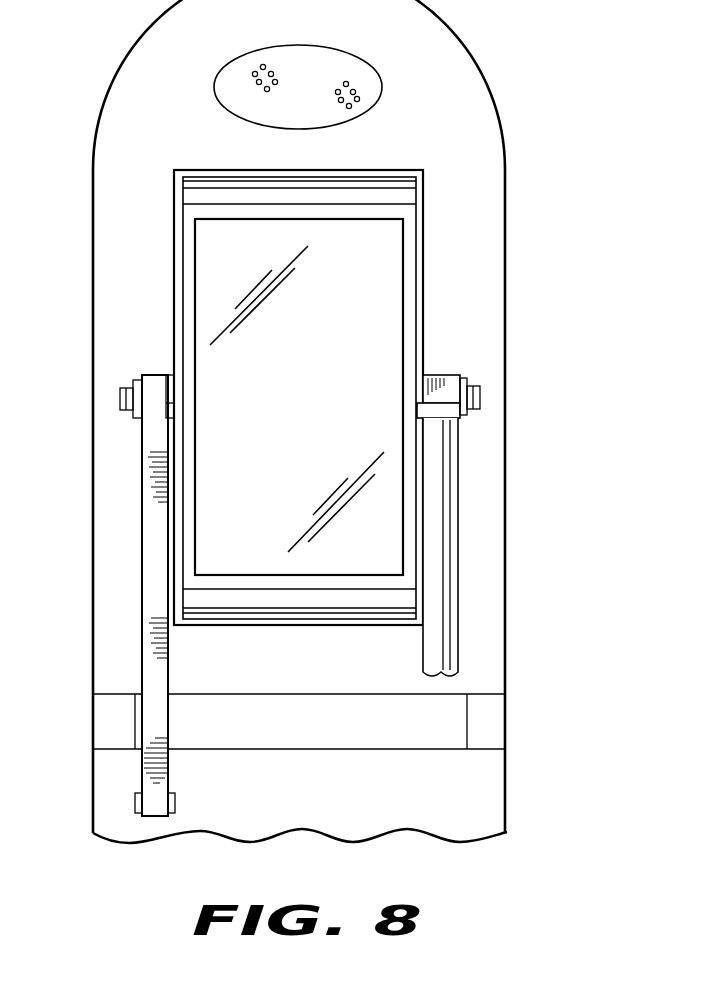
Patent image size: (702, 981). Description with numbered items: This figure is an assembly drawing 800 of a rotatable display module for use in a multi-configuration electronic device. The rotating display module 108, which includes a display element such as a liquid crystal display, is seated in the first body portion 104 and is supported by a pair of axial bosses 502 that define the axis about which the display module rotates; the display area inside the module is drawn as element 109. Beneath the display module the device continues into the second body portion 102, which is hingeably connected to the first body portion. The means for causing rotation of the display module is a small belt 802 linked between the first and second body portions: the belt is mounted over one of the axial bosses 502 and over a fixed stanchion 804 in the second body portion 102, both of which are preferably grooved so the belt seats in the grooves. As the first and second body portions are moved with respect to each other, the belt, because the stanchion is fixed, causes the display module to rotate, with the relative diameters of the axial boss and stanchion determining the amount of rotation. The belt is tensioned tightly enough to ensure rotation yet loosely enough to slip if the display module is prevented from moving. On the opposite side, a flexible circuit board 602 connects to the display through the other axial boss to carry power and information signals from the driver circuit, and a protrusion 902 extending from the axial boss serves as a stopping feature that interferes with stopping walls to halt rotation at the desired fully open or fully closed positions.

The second body portion 102 is at (507, 800).
The first body portion 104 is at (507, 490).
The rotating display module 108 is at (423, 290).
The display screen 109 is at (310, 412).
The axial boss 502 is at (120, 398).
The flexible circuit board 602 is at (423, 658).
The assembly drawing 800 is at (300, 460).
The belt 802 is at (140, 532).
The stanchion 804 is at (177, 805).
The protrusion 902 is at (135, 380).